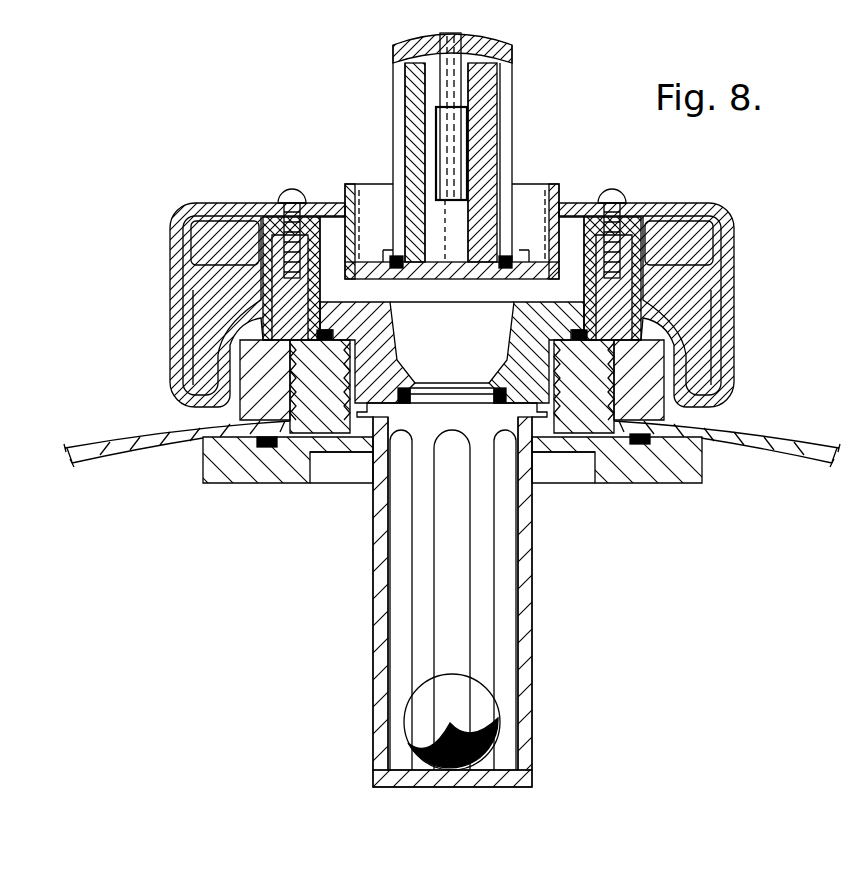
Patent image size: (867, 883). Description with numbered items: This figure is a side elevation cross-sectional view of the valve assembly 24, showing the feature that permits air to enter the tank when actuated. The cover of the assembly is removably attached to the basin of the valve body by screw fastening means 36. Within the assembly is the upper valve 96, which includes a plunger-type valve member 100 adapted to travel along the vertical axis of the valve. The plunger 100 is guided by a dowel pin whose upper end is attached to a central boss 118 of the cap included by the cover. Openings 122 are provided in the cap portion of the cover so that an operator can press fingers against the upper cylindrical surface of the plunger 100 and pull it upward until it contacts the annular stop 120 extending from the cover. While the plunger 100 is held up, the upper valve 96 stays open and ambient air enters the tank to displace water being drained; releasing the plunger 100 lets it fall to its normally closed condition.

The valve assembly 24 is at (312, 153).
The screw fastening means 36 is at (280, 197).
The upper valve 96 is at (452, 265).
The plunger-type valve member 100 is at (490, 148).
The central boss 118 is at (462, 47).
The annular stop 120 is at (394, 255).
The openings 122 is at (392, 108).